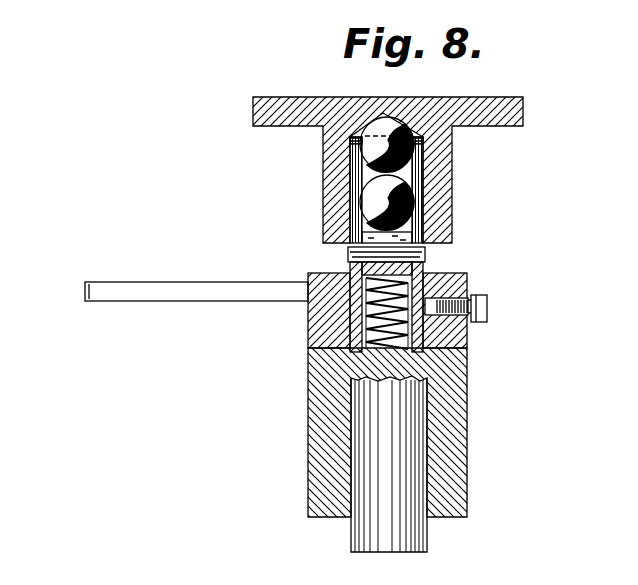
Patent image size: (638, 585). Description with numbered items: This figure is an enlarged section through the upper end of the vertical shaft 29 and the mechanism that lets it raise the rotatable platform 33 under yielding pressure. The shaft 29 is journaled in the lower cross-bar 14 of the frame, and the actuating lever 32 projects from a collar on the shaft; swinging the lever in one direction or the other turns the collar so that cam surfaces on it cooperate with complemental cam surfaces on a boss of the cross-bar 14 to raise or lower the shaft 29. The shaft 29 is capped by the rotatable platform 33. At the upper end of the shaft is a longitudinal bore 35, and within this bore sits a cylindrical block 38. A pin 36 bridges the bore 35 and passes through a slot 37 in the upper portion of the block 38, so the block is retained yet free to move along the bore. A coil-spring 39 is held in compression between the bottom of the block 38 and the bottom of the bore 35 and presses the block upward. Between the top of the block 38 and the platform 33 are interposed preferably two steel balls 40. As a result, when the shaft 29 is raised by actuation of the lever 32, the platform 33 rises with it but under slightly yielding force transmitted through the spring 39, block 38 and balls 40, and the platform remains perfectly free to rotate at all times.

The lower cross-bar 14 is at (458, 402).
The vertical shaft 29 is at (370, 518).
The actuating lever 32 is at (154, 277).
The rotatable platform 33 is at (497, 97).
The longitudinal bore 35 is at (427, 173).
The pin 36 is at (352, 252).
The slot 37 is at (420, 232).
The cylindrical block 38 is at (415, 268).
The coil-spring 39 is at (375, 316).
The steel balls 40 is at (367, 198).